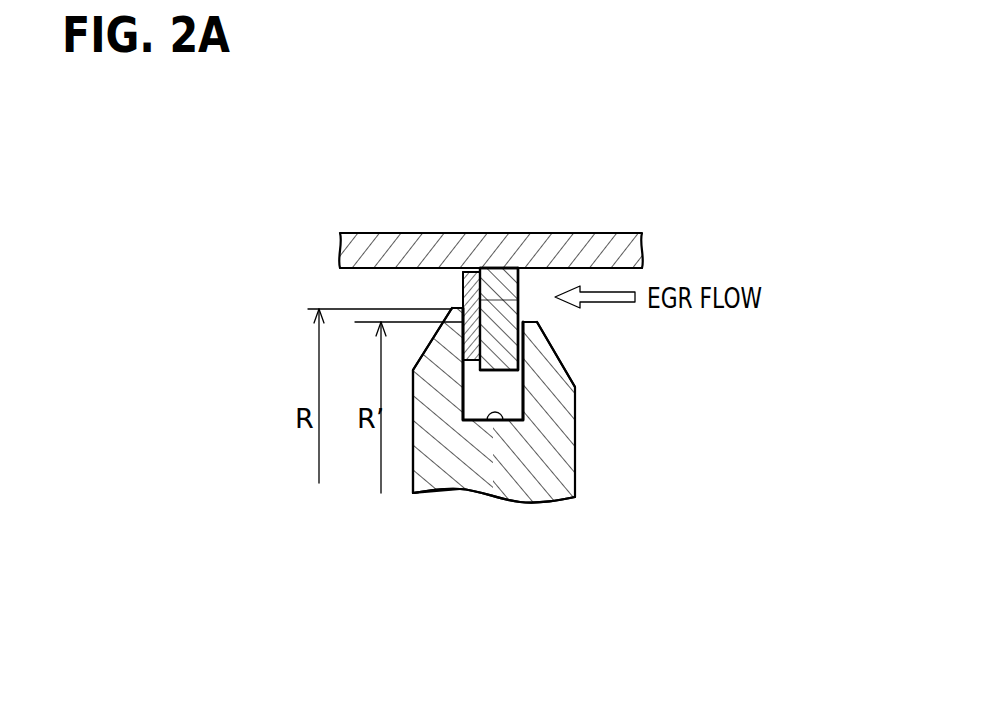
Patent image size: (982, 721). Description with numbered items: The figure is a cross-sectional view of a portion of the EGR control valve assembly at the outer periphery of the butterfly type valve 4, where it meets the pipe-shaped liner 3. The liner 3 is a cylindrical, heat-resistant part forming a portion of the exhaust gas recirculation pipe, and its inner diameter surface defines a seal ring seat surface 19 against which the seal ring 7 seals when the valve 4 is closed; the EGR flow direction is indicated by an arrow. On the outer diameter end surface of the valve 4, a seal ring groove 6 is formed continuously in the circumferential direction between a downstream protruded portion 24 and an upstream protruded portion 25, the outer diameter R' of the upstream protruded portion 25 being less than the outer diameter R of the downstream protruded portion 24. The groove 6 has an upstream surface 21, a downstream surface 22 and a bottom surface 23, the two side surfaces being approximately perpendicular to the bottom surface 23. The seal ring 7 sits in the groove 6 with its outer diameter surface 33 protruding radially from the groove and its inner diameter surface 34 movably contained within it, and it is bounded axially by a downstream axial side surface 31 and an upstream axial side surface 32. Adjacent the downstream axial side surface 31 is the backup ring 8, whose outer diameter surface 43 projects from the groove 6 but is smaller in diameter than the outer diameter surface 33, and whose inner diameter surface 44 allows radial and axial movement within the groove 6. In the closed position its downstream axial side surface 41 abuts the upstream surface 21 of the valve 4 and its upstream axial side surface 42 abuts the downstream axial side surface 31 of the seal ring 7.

The liner 3 is at (363, 233).
The butterfly type valve 4 is at (435, 482).
The seal ring groove 6 is at (608, 562).
The seal ring 7 is at (605, 182).
The backup ring 8 is at (458, 182).
The seal ring seat surface 19 is at (378, 269).
The upstream surface 21 is at (466, 390).
The downstream surface 22 is at (547, 432).
The bottom surface 23 is at (522, 380).
The downstream protruded portion 24 is at (437, 342).
The upstream protruded portion 25 is at (545, 348).
The downstream axial side surface 31 is at (480, 270).
The upstream axial side surface 32 is at (519, 295).
The outer diameter surface 33 is at (512, 270).
The inner diameter surface 34 is at (483, 372).
The downstream axial side surface 41 is at (466, 290).
The upstream axial side surface 42 is at (488, 302).
The outer diameter surface 43 is at (475, 268).
The inner diameter surface 44 is at (413, 478).